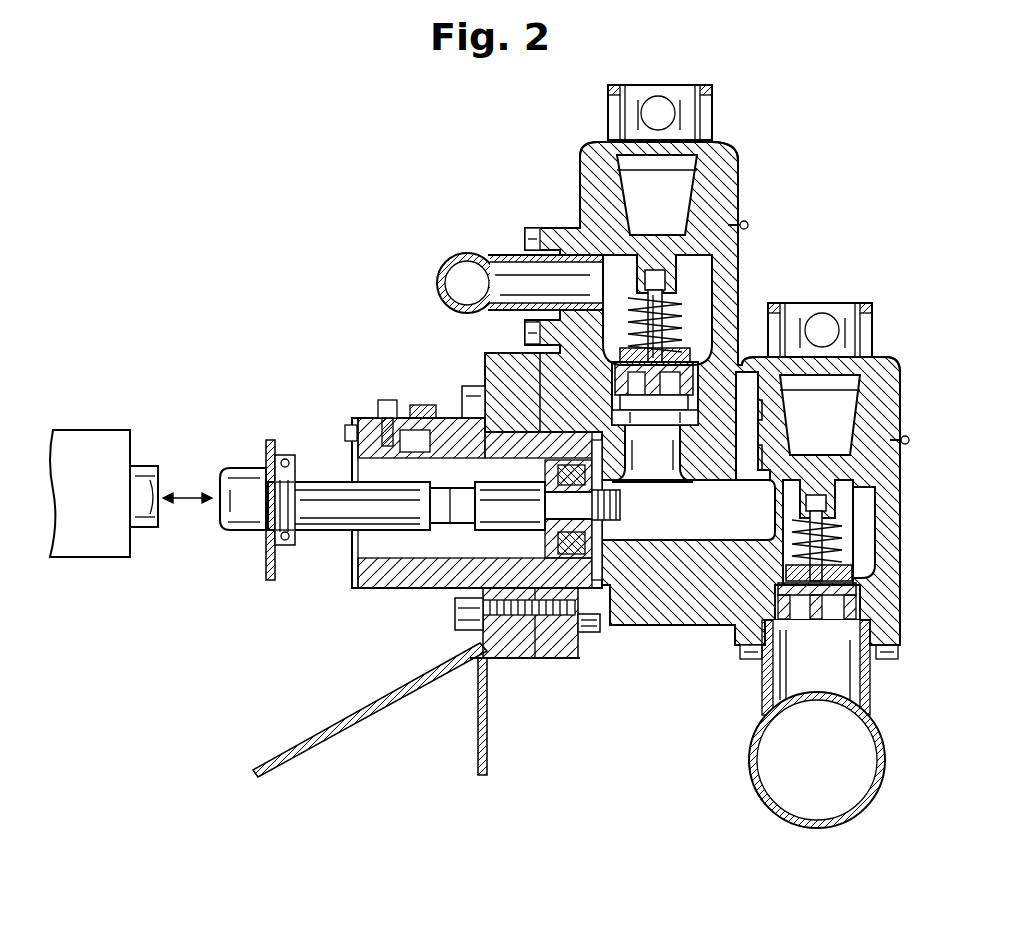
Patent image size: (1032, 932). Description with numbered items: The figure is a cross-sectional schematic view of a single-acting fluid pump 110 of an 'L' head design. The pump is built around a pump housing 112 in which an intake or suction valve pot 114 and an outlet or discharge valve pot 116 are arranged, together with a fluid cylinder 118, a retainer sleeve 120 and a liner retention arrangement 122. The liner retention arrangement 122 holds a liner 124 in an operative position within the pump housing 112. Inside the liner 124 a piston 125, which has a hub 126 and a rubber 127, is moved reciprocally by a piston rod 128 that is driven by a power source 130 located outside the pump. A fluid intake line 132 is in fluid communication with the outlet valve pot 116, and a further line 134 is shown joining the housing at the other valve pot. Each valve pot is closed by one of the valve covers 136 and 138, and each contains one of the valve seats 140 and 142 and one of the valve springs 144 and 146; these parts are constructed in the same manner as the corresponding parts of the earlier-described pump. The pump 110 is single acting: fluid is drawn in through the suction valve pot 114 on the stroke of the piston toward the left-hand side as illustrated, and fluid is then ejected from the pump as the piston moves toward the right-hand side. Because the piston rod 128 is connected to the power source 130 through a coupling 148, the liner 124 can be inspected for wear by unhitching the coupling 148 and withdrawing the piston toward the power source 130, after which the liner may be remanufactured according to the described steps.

The pump 110 is at (796, 214).
The pump housing 112 is at (900, 484).
The intake or suction valve pot 114 is at (884, 355).
The outlet or discharge valve pot 116 is at (726, 127).
The fluid cylinder 118 is at (680, 586).
The retainer sleeve 120 is at (468, 572).
The liner retention arrangement 122 is at (416, 404).
The liner 124 is at (372, 548).
The piston 125 is at (612, 513).
The hub 126 is at (550, 622).
The rubber 127 is at (602, 624).
The piston rod 128 is at (232, 467).
The power source 130 is at (104, 503).
The fluid intake line 132 is at (880, 752).
The inlet pipe 134 is at (440, 272).
The valve cover 136 is at (848, 312).
The valve cover 138 is at (626, 103).
The valve seat 140 is at (857, 597).
The valve seat 142 is at (625, 385).
The valve spring 144 is at (840, 540).
The valve spring 146 is at (678, 320).
The coupling 148 is at (266, 446).